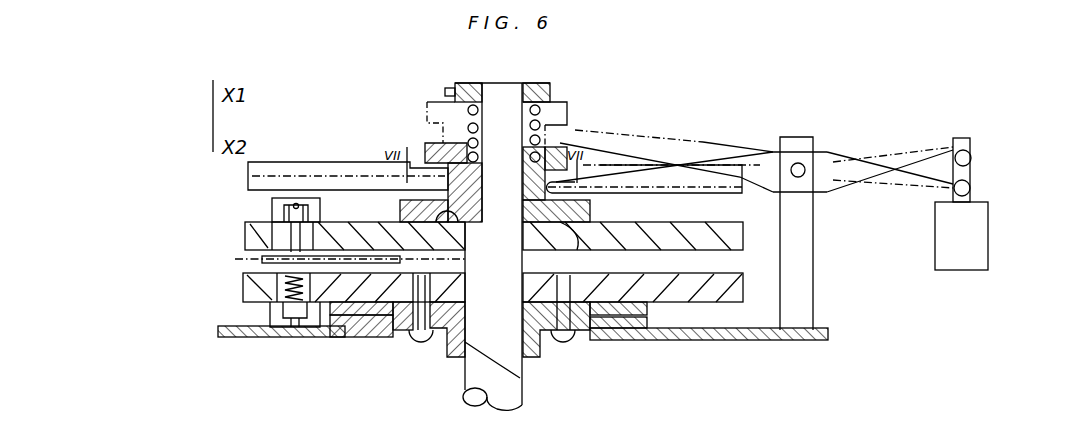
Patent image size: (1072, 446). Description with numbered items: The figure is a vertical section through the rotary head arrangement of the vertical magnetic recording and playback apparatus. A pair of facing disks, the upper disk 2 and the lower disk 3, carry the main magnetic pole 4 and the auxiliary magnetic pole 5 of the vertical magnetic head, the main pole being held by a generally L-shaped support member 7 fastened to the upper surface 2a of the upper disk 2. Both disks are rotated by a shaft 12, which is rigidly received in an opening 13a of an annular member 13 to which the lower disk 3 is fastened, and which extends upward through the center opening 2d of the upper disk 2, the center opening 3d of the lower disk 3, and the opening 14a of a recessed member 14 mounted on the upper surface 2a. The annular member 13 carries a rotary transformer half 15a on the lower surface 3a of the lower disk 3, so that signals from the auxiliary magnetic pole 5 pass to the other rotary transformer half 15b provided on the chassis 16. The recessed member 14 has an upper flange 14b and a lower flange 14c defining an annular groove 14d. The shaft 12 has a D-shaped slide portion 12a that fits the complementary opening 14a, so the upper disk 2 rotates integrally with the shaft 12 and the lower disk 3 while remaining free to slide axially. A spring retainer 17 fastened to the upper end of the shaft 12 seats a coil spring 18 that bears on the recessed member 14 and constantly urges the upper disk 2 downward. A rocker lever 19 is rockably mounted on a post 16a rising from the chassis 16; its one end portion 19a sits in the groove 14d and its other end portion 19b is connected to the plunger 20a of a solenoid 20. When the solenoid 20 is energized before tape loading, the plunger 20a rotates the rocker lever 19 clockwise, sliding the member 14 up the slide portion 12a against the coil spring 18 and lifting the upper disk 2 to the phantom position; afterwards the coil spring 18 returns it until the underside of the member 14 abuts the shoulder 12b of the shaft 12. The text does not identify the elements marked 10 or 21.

The upper disk 2 is at (263, 236).
The upper surface of the upper disk 2a is at (333, 226).
The center opening of the upper disk 2d is at (520, 250).
The lower disk 3 is at (250, 287).
The lower surface of the lower disk 3a is at (670, 305).
The center opening of the lower disk 3d is at (523, 284).
The main magnetic pole 4 is at (290, 253).
The auxiliary magnetic pole 5 is at (275, 303).
The support member 7 is at (270, 205).
The nut 10 is at (268, 320).
The shaft 12 is at (468, 382).
The slide portion 12a is at (460, 118).
The shoulder 12b is at (433, 247).
The annular member 13 is at (447, 352).
The opening of the annular member 13a is at (512, 378).
The recessed member 14 is at (427, 143).
The opening of the recessed member 14a is at (520, 205).
The upper flange 14b is at (567, 133).
The lower flange 14c is at (590, 217).
The annular recess or groove 14d is at (603, 163).
The rotary transformer half 15a is at (334, 338).
The rotary transformer half 15b is at (368, 338).
The chassis 16 is at (290, 338).
The post 16a is at (805, 306).
The spring retainer 17 is at (548, 82).
The coil spring 18 is at (540, 110).
The rocker lever 19 is at (703, 142).
The end portion of the rocker lever 19a is at (577, 250).
The other end portion of the rocker lever 19b is at (923, 148).
The solenoid 20 is at (988, 240).
The plunger 20a is at (975, 140).
The shim plate 21 is at (258, 262).